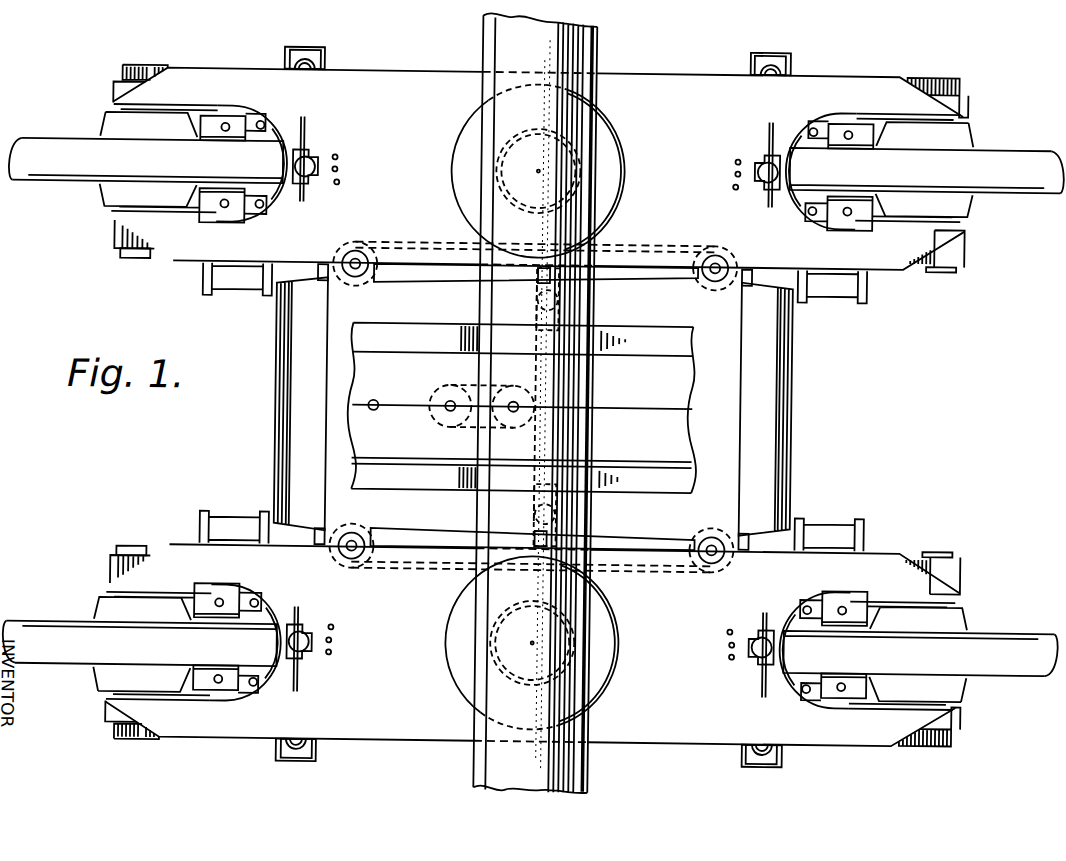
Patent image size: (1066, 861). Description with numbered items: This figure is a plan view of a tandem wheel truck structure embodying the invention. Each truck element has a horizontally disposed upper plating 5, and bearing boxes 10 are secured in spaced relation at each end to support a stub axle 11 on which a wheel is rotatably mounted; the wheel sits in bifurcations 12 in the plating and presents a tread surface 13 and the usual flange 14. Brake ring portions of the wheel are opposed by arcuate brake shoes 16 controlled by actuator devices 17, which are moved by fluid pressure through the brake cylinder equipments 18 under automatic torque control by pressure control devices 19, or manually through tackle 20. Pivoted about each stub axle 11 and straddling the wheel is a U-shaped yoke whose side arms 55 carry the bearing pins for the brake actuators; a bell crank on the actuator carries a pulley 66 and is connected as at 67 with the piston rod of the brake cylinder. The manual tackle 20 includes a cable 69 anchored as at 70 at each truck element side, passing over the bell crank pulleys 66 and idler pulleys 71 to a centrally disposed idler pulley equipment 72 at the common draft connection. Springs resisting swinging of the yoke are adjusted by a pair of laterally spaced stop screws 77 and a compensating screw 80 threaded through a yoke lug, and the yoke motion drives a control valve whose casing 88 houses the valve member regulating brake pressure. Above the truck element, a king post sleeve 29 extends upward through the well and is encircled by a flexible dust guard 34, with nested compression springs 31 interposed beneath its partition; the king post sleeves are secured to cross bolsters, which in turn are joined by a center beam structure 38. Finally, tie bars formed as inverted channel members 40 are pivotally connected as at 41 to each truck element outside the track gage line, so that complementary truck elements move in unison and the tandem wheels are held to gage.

The upper plating 5 is at (536, 407).
The bearing boxes 10 is at (957, 721).
The stub axle 11 is at (930, 568).
The bifurcations 12 is at (790, 615).
The tread surface 13 is at (533, 407).
The flange 14 is at (1008, 635).
The arcuate brake shoes 16 is at (845, 698).
The actuator devices 17 is at (806, 700).
The brake cylinder equipments 18 is at (826, 525).
The pressure control devices 19 is at (754, 628).
The tackle 20 is at (432, 545).
The king post sleeve 29 is at (488, 645).
The nested compression springs 31 is at (573, 82).
The flexible dust guard 34 is at (452, 668).
The center beam structure 38 is at (694, 380).
The inverted channel member 40 is at (772, 49).
The pivotal connection 41 is at (762, 772).
The side arms 55 is at (905, 712).
The pulley 66 is at (720, 560).
The connection 67 is at (748, 540).
The cable 69 is at (665, 535).
The anchorage 70 is at (595, 570).
The idler pulleys 71 is at (600, 462).
The idler pulley equipment 72 is at (545, 412).
The screws 77 is at (728, 662).
The screw 80 is at (728, 647).
The casing 88 is at (760, 690).